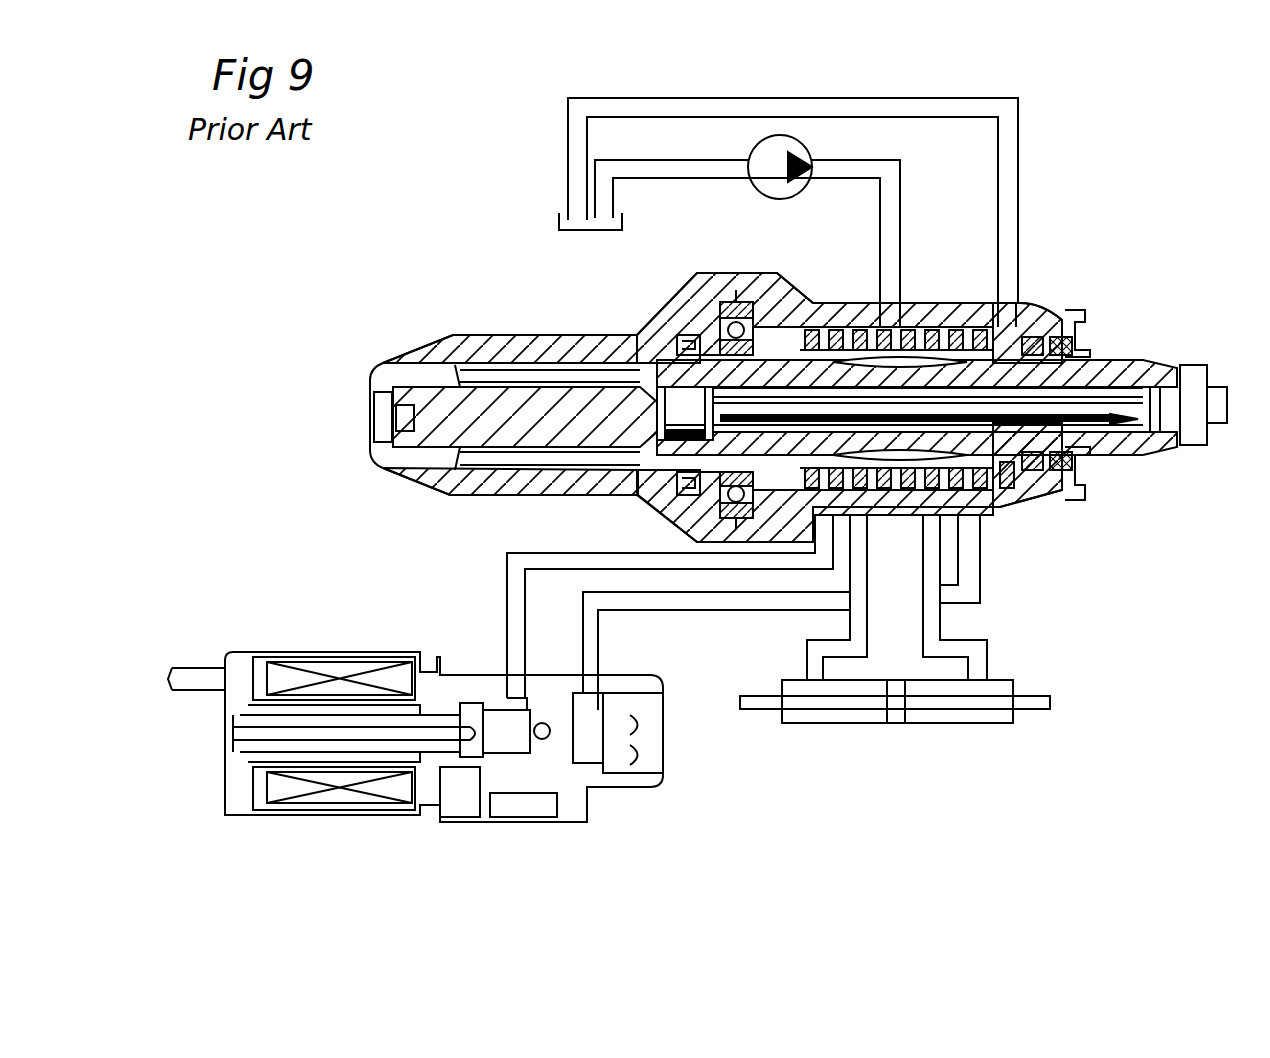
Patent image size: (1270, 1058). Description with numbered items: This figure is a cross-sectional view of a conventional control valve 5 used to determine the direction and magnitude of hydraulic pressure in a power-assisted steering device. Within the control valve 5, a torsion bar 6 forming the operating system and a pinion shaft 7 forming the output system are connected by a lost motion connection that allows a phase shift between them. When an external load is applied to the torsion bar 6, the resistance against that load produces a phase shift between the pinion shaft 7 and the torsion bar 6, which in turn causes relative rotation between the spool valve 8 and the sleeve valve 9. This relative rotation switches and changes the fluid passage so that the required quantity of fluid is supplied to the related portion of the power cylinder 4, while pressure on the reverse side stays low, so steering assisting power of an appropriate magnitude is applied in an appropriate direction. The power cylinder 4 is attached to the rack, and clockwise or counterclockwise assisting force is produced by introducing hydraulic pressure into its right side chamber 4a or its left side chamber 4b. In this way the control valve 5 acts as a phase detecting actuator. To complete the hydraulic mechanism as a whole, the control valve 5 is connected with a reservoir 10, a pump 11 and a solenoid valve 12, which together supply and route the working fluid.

The power cylinder 4 is at (902, 734).
The right side chamber 4a is at (1013, 723).
The left side chamber 4b is at (783, 723).
The control valve 5 is at (1040, 294).
The torsion bar 6 is at (1123, 422).
The pinion shaft 7 is at (502, 390).
The spool valve 8 is at (1013, 452).
The sleeve valve 9 is at (1005, 490).
The reservoir 10 is at (600, 232).
The pump 11 is at (798, 194).
The solenoid valve 12 is at (647, 672).